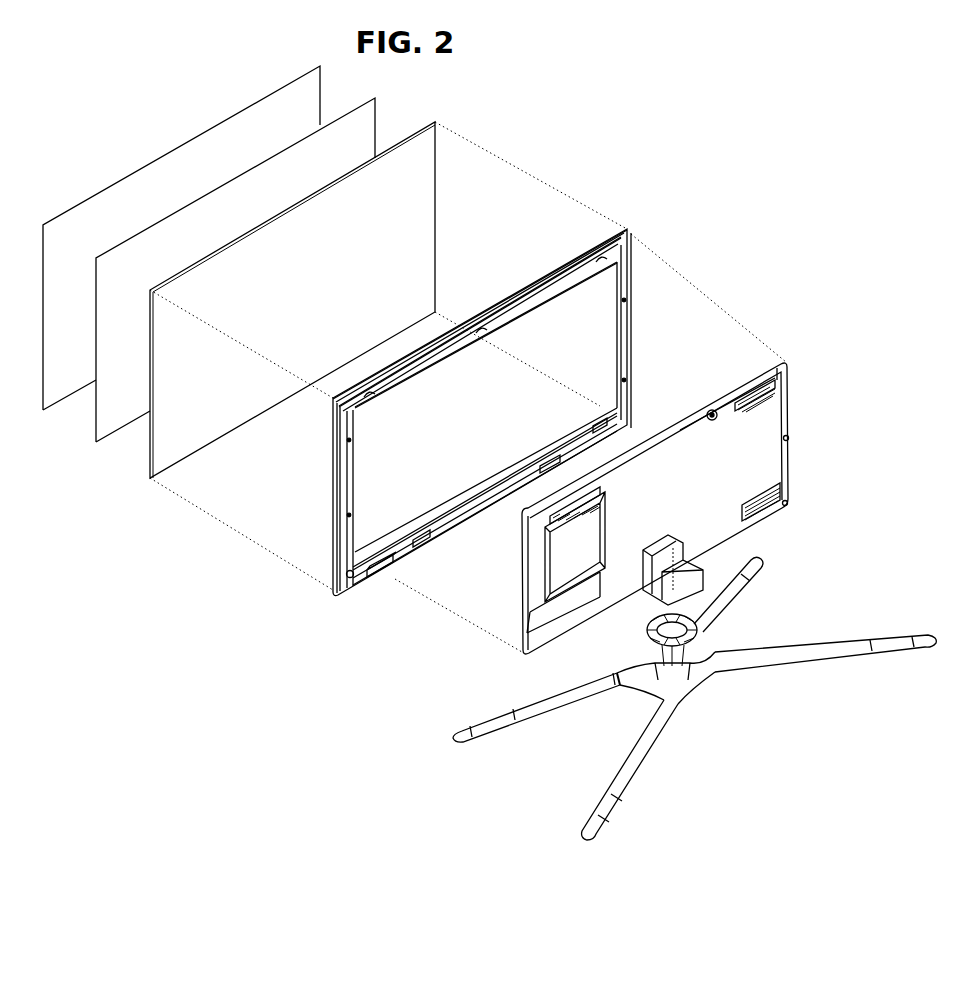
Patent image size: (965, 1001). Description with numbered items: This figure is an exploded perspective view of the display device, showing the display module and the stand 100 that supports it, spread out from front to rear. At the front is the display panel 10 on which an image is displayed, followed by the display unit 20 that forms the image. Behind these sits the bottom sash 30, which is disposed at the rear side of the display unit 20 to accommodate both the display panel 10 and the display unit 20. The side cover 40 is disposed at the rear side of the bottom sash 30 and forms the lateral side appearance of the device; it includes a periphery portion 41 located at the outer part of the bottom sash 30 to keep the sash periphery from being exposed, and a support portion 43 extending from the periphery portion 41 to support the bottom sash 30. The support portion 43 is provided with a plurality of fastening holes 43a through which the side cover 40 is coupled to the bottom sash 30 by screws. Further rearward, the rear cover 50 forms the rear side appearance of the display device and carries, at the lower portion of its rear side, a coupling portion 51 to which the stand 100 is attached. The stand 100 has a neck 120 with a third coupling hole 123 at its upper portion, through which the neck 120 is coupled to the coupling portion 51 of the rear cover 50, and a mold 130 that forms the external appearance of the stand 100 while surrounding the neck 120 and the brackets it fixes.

The display panel 10 is at (65, 395).
The display unit 20 is at (126, 420).
The bottom sash 30 is at (183, 441).
The side cover 40 is at (325, 526).
The periphery portion 41 is at (333, 431).
The support portion 43 is at (333, 452).
The fastening holes 43a is at (342, 472).
The rear cover 50 is at (507, 600).
The coupling portion 51 is at (690, 565).
The stand 100 is at (694, 698).
The neck 120 is at (640, 646).
The third coupling hole 123 is at (648, 632).
The mold 130 is at (828, 646).